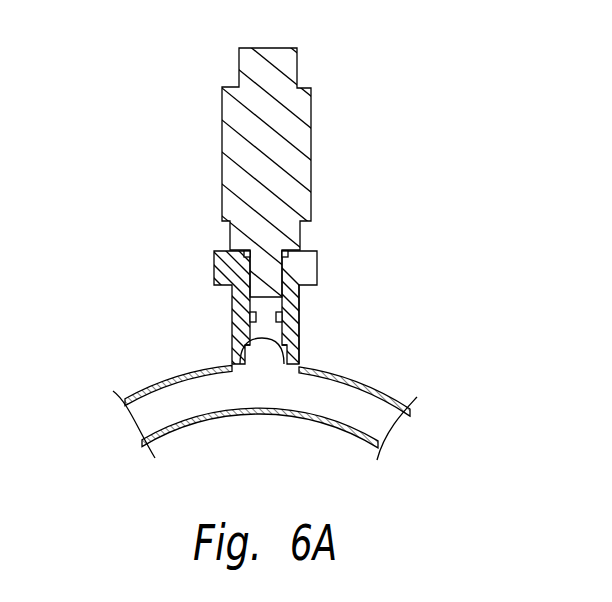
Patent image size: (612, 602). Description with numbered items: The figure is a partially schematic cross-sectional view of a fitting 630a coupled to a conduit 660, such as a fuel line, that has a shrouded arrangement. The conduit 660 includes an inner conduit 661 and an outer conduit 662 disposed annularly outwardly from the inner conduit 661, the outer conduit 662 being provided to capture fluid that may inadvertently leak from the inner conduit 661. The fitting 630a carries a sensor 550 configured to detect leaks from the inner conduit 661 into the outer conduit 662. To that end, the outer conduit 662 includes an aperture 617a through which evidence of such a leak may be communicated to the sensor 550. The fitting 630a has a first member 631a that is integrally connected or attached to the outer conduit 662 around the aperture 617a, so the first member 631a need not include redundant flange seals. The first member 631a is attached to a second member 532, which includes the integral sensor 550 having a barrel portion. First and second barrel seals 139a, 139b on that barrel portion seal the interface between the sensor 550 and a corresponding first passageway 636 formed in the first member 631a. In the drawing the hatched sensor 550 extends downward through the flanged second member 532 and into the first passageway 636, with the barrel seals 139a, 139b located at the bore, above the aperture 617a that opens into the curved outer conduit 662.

The sensor 550 is at (292, 130).
The fitting 630a is at (152, 124).
The second member 532 is at (236, 312).
The first member 631a is at (300, 330).
The first barrel seal 139a is at (289, 251).
The second barrel seal 139b is at (282, 316).
The aperture 617a is at (245, 365).
The first passageway 636 is at (278, 362).
The conduit 660 is at (302, 394).
The inner conduit 661 is at (332, 413).
The outer conduit 662 is at (163, 380).